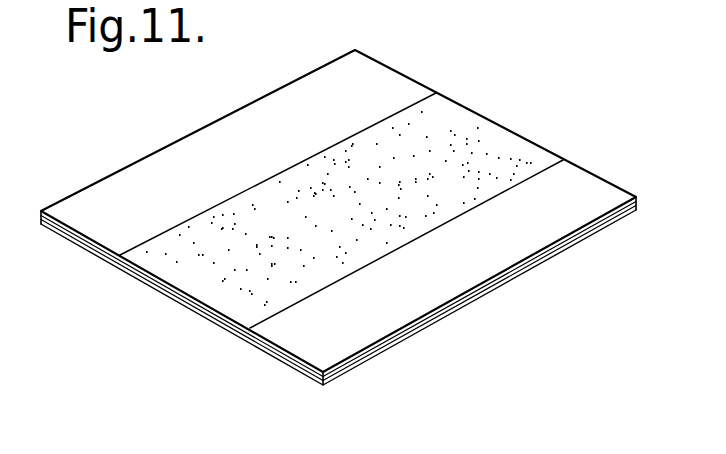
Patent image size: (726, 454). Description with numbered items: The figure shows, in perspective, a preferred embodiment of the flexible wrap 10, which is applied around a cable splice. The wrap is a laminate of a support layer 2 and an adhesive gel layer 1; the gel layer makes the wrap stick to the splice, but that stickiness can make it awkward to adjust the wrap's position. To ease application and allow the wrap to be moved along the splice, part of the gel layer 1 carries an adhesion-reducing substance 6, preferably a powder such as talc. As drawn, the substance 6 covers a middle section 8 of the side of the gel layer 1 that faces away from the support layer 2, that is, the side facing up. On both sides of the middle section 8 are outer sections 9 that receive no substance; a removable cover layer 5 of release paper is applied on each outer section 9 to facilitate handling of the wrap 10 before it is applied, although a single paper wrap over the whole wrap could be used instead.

The flexible wrap 10 is at (217, 120).
The gel layer 1 is at (63, 226).
The support layer 2 is at (123, 267).
The removable cover layer 5 is at (95, 197).
The adhesion-reducing substance 6 is at (218, 290).
The middle section 8 is at (481, 138).
The outer section 9 is at (160, 182).